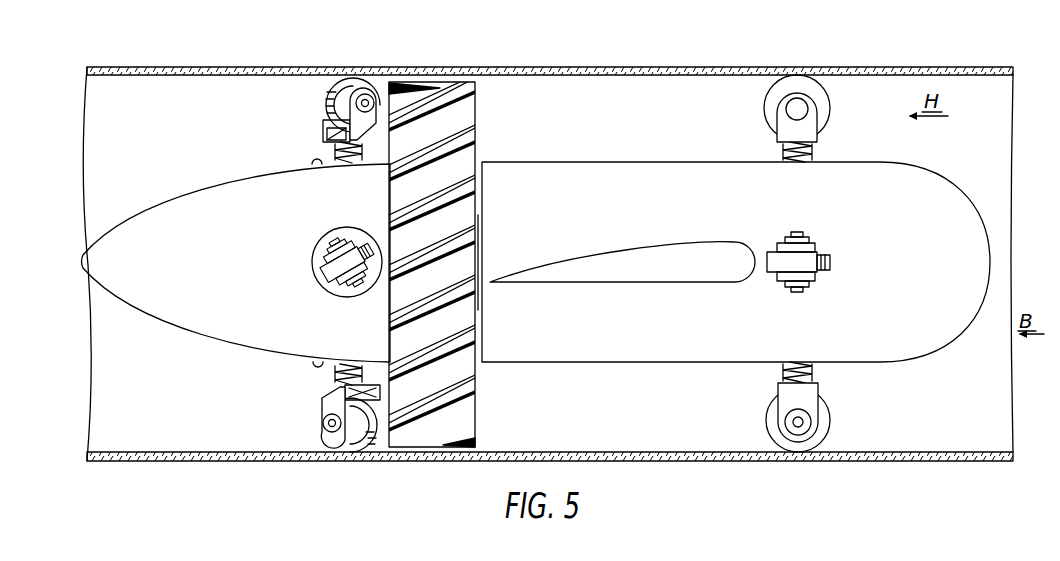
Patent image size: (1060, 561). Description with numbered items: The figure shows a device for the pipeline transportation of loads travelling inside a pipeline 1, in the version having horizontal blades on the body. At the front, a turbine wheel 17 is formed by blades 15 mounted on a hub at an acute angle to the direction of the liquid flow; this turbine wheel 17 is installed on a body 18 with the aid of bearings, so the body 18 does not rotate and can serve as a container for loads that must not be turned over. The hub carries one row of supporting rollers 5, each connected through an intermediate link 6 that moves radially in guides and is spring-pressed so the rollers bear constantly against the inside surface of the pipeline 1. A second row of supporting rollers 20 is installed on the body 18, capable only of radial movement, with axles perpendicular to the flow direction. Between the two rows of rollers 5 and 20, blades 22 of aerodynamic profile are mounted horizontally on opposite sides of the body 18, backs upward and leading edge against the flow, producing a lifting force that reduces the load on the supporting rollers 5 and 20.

The pipeline 1 is at (238, 68).
The supporting rollers 5 is at (329, 97).
The intermediate link 6 is at (784, 156).
The blades 15 is at (460, 117).
The turbine wheel 17 is at (446, 233).
The body 18 is at (657, 177).
The supporting rollers (second row) 20 is at (774, 87).
The blades (horizontal) 22 is at (630, 258).